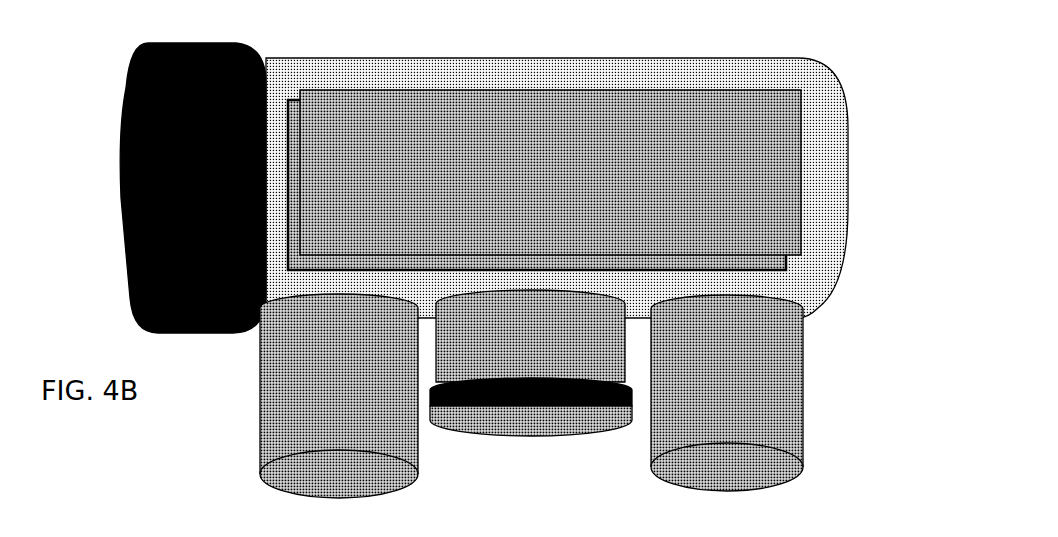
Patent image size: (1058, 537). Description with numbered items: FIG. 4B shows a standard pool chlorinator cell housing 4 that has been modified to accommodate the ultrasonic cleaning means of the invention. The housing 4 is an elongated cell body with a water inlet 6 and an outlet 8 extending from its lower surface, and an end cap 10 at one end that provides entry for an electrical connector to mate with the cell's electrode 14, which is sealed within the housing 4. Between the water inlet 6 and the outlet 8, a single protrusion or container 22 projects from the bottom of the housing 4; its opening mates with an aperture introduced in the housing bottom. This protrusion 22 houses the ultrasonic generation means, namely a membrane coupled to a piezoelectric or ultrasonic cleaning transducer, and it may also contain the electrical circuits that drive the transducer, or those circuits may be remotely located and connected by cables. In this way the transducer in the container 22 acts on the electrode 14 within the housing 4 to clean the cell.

The housing 4 is at (778, 63).
The electrode 14 is at (763, 153).
The end cap 10 is at (117, 235).
The water inlet 6 is at (268, 422).
The outlet 8 is at (777, 405).
The protrusion or container 22 is at (533, 460).